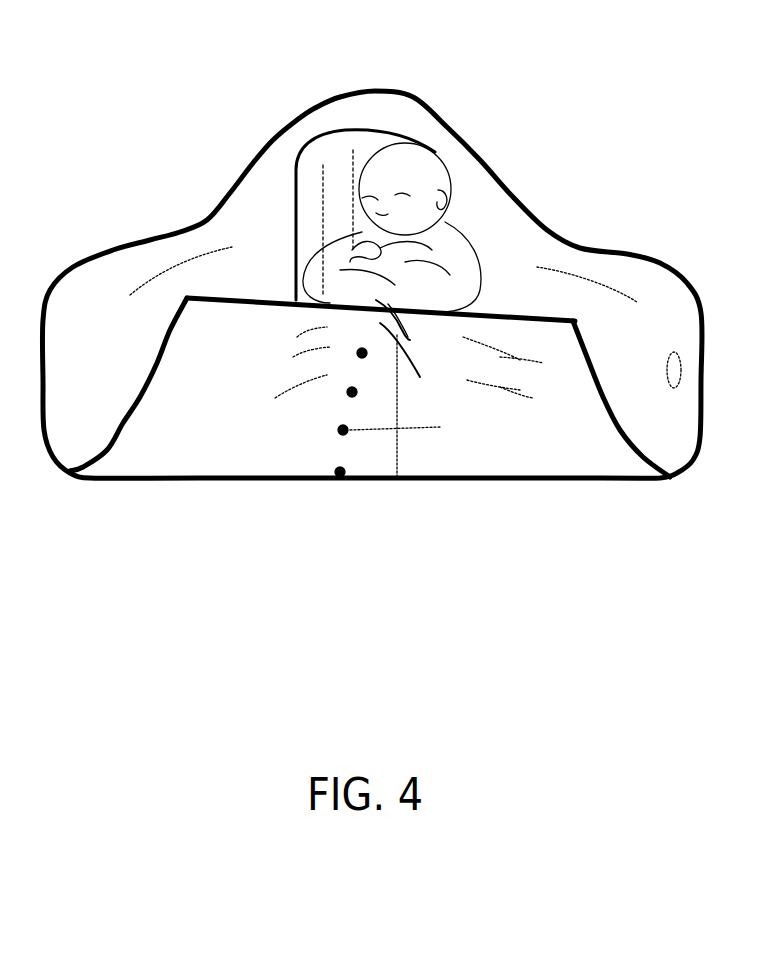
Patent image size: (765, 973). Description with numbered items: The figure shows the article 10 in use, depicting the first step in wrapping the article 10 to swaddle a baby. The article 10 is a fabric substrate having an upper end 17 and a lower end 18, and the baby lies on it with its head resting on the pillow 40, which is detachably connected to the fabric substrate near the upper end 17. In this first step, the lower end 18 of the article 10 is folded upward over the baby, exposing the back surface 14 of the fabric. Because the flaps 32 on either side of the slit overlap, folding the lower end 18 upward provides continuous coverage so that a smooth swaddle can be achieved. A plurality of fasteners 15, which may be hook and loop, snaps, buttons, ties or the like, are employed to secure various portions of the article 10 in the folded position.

The article 10 is at (197, 63).
The upper end 17 is at (340, 92).
The pillow 40 is at (295, 166).
The lower end 18 is at (160, 358).
The back surface 14 is at (160, 425).
The fastener 15 is at (345, 470).
The flap 32 is at (402, 454).